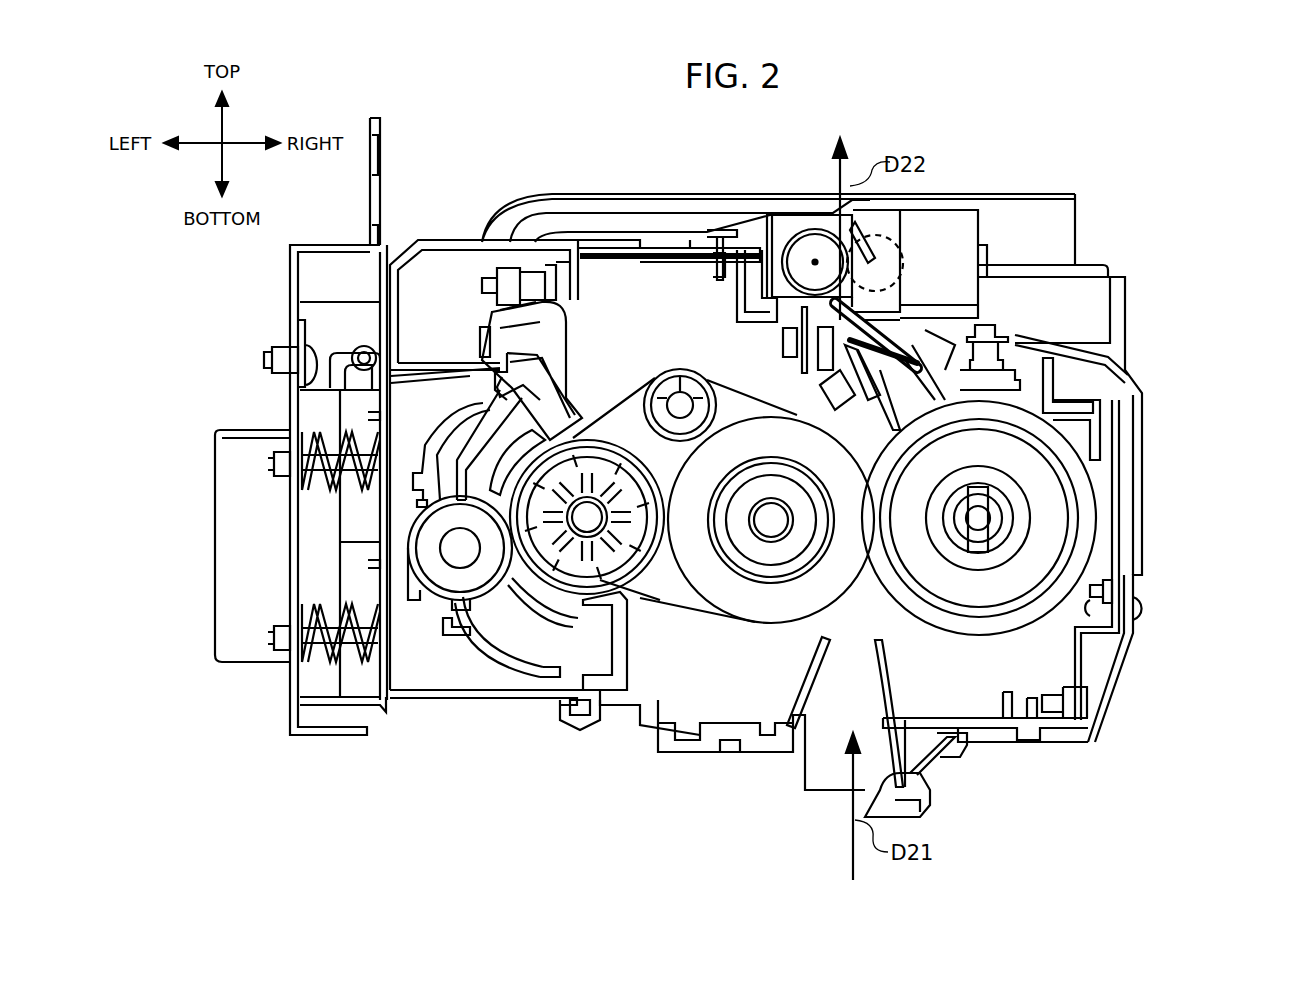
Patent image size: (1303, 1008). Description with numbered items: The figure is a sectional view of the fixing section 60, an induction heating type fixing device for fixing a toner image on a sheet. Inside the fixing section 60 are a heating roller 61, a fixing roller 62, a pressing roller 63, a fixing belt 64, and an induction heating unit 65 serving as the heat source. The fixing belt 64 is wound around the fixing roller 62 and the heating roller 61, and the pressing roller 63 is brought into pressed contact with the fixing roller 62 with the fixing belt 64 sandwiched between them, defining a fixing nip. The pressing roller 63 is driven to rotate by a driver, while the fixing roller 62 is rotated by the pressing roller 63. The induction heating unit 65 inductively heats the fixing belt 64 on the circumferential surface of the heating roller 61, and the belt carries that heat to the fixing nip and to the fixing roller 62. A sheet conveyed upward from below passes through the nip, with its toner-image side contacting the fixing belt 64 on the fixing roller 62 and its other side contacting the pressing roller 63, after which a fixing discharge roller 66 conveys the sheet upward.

The fixing section 60 is at (1133, 232).
The heating roller 61 is at (585, 573).
The fixing roller 62 is at (757, 590).
The pressing roller 63 is at (1090, 523).
The fixing belt 64 is at (628, 600).
The induction heating unit 65 is at (470, 625).
The fixing discharge roller 66 is at (805, 242).